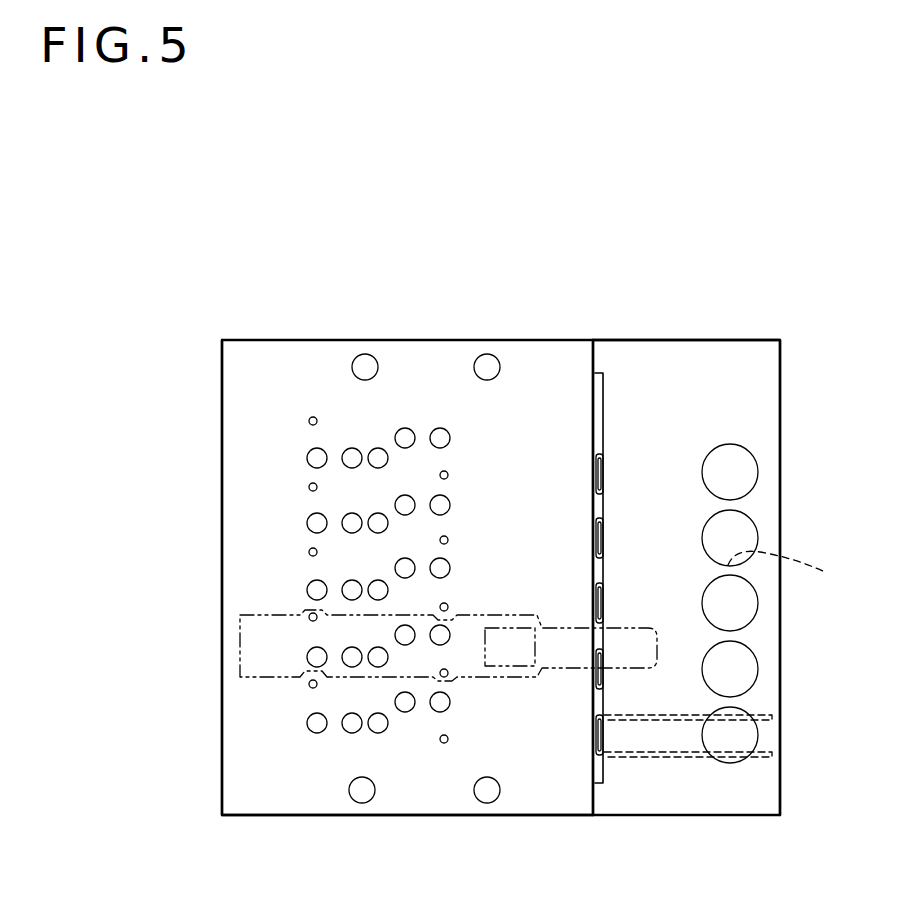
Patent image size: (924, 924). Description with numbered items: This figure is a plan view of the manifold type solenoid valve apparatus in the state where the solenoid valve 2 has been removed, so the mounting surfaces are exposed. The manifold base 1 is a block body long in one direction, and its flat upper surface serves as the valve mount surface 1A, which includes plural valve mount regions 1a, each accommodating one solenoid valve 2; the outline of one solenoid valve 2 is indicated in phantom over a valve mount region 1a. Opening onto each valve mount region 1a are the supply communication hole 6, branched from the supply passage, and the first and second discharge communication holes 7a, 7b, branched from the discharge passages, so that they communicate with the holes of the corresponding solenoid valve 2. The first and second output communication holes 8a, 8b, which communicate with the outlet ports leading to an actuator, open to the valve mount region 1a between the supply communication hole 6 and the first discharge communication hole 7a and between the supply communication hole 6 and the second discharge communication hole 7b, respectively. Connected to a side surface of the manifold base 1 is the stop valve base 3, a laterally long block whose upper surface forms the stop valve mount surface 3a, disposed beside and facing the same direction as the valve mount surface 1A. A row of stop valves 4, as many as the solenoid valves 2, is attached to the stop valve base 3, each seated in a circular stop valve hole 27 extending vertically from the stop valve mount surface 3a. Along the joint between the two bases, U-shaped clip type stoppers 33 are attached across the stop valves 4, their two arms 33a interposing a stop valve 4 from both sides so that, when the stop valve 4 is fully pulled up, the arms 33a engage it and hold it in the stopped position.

The manifold base 1 is at (402, 815).
The valve mount surface 1A is at (283, 765).
The valve mount region 1a is at (278, 460).
The solenoid valve 2 is at (236, 643).
The stop valve base 3 is at (677, 818).
The stop valve mount surface 3a is at (685, 368).
The stop valve 4 is at (738, 528).
The supply communication hole 6 is at (378, 462).
The first discharge communication hole 7a is at (317, 462).
The second discharge communication hole 7b is at (440, 442).
The first output communication hole 8a is at (352, 462).
The second output communication hole 8b is at (405, 442).
The stop valve hole 27 is at (797, 569).
The stopper 33 is at (596, 462).
The arm 33a is at (757, 716).